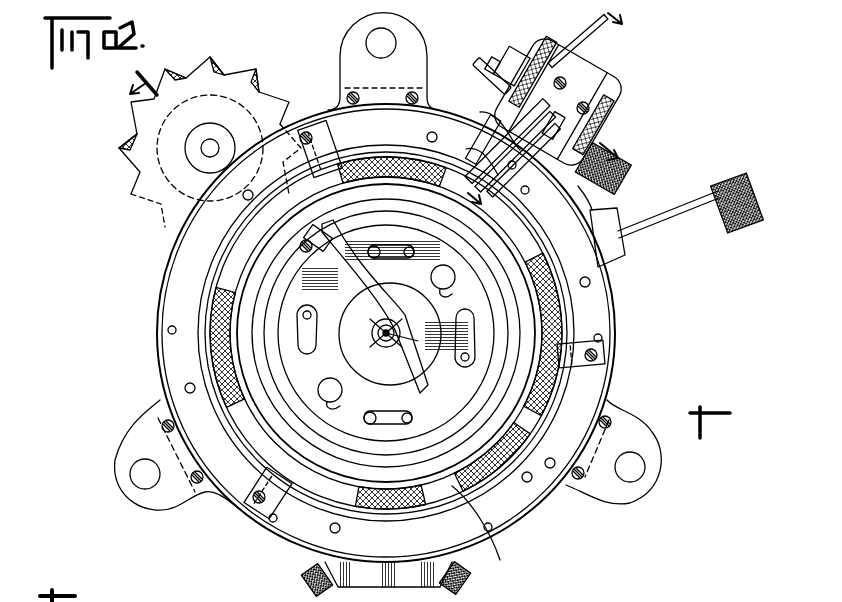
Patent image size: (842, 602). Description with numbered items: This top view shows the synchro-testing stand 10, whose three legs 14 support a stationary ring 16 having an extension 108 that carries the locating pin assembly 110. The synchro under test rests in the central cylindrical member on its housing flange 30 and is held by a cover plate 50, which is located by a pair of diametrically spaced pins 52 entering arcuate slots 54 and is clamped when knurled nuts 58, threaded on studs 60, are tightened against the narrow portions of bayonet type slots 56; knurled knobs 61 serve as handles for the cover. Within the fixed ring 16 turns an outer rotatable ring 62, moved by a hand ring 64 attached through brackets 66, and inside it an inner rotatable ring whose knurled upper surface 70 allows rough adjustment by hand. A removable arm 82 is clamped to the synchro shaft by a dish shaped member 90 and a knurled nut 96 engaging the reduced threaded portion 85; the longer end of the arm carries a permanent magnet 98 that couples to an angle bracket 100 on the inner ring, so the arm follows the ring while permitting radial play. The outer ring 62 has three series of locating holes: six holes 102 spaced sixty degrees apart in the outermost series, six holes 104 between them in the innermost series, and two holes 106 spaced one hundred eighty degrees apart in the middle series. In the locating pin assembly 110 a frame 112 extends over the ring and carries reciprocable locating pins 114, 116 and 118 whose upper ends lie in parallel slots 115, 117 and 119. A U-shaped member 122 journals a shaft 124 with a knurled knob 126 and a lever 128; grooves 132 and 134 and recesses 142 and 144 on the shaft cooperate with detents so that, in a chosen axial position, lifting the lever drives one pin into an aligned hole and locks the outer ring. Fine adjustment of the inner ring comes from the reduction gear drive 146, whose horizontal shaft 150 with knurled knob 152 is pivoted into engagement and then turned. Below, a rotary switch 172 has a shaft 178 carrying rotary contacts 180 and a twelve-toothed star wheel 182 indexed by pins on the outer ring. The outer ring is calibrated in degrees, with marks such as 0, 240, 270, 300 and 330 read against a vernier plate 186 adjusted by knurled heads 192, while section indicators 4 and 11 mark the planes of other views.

The stand or framework 10 is at (642, 429).
The uprights or legs 14 is at (380, 46).
The stationary ring 16 is at (604, 343).
The flange 30 is at (285, 515).
The cover plate 50 is at (400, 240).
The diametrically spaced pins 52 is at (412, 253).
The arcuate slots 54 is at (374, 258).
The bayonet type slots 56 is at (308, 355).
The knurled nut 58 is at (297, 320).
The stud 60 is at (210, 435).
The knurled knobs 61 is at (386, 337).
The outer rotatable ring 62 is at (170, 323).
The hand ring 64 is at (235, 263).
The brackets 66 is at (261, 523).
The knurled upper surface 70 is at (507, 511).
The removable arm 82 is at (352, 291).
The threaded portion 85 is at (380, 342).
The dish shaped member 90 is at (385, 391).
The knurled nut 96 is at (402, 329).
The permanent magnet 98 is at (320, 230).
The angle bracket 100 is at (345, 270).
The locating holes 102 is at (302, 130).
The locating holes 104 is at (249, 190).
The locating holes 106 is at (226, 178).
The extension 108 is at (598, 70).
The locating pin assembly 110 is at (620, 120).
The frame 112 is at (496, 126).
The locating pin 114 is at (482, 201).
The slot 115 is at (470, 152).
The locating pin 116 is at (503, 213).
The slot 117 is at (514, 181).
The locating pin 118 is at (518, 233).
The slot 119 is at (593, 201).
The U-shaped member 122 is at (540, 40).
The shaft 124 is at (480, 70).
The knurled knob 126 is at (620, 173).
The lever 128 is at (598, 24).
The circumferential groove 132 is at (565, 120).
The circumferential groove 134 is at (559, 92).
The recess 142 is at (506, 70).
The recess 144 is at (496, 55).
The reduction gear drive 146 is at (630, 249).
The horizontal shaft 150 is at (660, 216).
The knurled knob 152 is at (735, 180).
The rotary switch 172 is at (240, 66).
The shaft 178 is at (210, 146).
The rotary contact 180 is at (383, 131).
The star wheel 182 is at (135, 184).
The vernier plate 186 is at (368, 577).
The knurled heads 192 is at (305, 584).
The dial graduation 240 is at (557, 232).
The dial graduation 270 is at (588, 326).
The dial graduation 300 is at (565, 446).
The dial graduation 330 is at (491, 513).
The dial graduation 0 is at (386, 561).
The section line 4- 4 is at (419, 255).
The section line 11- 11 is at (557, 115).